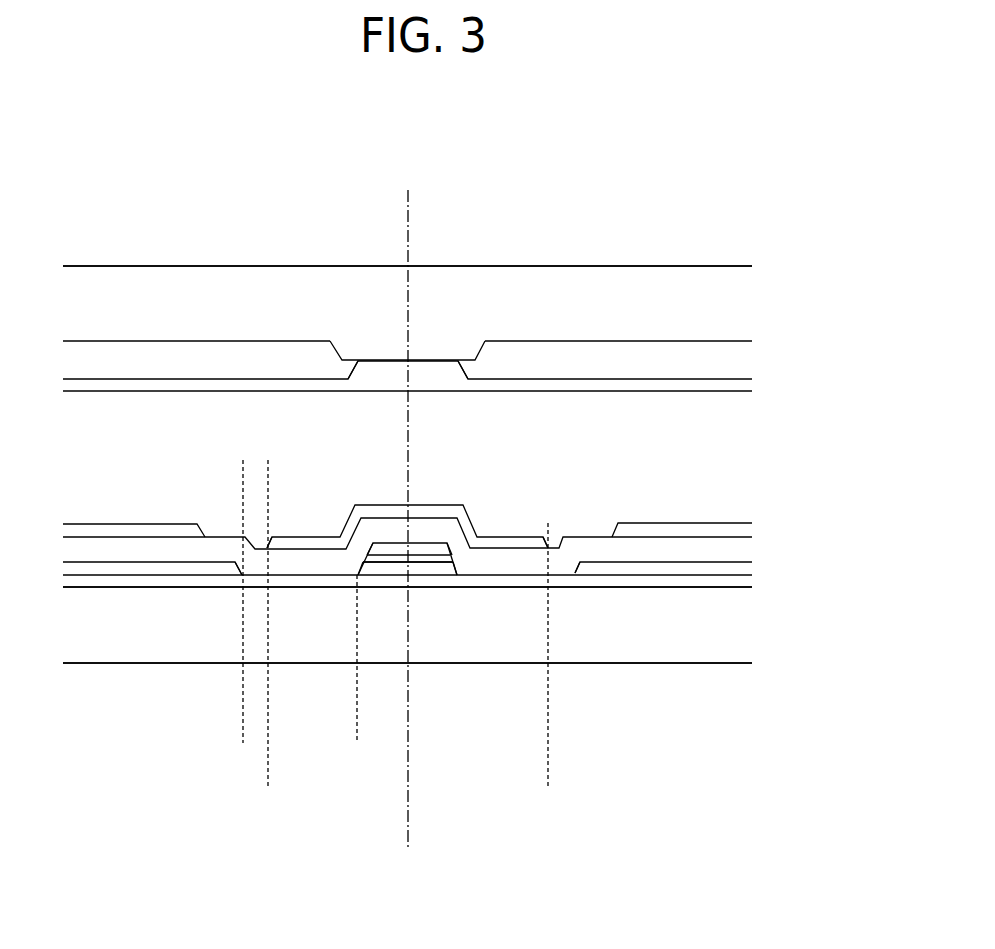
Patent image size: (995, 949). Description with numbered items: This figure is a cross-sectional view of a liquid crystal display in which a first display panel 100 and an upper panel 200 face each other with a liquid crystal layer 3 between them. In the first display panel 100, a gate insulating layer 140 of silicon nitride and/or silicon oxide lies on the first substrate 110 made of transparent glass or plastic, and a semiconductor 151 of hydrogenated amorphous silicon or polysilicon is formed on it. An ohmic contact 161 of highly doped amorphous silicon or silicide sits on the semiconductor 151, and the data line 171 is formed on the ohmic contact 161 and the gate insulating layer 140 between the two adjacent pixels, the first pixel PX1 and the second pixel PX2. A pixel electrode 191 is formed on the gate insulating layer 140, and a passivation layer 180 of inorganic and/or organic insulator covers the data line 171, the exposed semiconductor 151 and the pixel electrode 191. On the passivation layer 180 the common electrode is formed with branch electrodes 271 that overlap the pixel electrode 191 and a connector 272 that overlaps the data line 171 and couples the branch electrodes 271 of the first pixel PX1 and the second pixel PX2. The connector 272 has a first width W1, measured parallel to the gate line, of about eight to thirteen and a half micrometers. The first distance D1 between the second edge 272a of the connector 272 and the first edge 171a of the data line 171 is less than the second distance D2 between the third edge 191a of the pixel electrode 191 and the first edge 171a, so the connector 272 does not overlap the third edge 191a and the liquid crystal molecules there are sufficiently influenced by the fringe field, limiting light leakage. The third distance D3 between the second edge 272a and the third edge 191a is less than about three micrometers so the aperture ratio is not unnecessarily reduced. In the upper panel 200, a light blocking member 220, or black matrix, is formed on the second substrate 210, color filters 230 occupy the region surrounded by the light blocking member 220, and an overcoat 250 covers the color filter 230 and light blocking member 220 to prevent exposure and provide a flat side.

The liquid crystal layer 3 is at (763, 393).
The first display panel 100 is at (763, 524).
The first substrate 110 is at (493, 640).
The gate insulating layer 140 is at (605, 580).
The semiconductor 151 is at (390, 568).
The ohmic contact 161 is at (403, 558).
The data line 171 is at (435, 550).
The first edge of the data line 171a is at (368, 542).
The passivation layer 180 is at (172, 548).
The pixel electrode 191 is at (110, 567).
The third edge of the pixel electrode 191a is at (242, 573).
The upper panel 200 is at (763, 266).
The second substrate 210 is at (326, 297).
The light blocking member 220 is at (437, 353).
The color filter 230 is at (247, 357).
The overcoat 250 is at (527, 383).
The branch electrode 271 is at (137, 532).
The connector 272 is at (510, 542).
The second edge of the connector 272a is at (268, 547).
The first distance D1 is at (350, 684).
The second distance D2 is at (350, 732).
The third distance D3 is at (307, 467).
The first width W1 is at (275, 778).
The first pixel PX1 is at (398, 834).
The second pixel PX2 is at (752, 834).